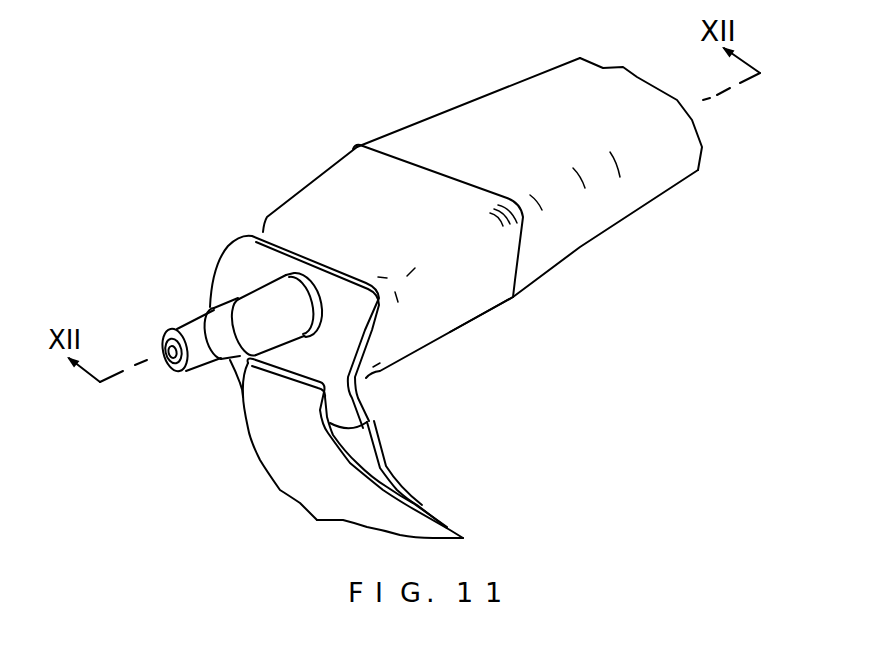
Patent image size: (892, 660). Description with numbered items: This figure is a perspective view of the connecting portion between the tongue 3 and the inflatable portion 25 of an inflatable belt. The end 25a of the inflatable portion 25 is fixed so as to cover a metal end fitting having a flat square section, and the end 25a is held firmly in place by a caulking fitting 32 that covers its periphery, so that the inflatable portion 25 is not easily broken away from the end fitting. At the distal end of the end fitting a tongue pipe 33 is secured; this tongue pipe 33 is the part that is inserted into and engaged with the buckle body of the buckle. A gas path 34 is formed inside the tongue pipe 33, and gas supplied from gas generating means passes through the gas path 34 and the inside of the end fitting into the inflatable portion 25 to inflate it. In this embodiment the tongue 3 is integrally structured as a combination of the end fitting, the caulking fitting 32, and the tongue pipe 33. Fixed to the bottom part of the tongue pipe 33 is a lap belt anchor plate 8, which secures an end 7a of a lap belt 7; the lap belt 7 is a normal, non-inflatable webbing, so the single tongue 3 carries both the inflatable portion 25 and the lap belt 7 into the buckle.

The tongue 3 is at (452, 351).
The inflatable portion 25 is at (632, 213).
The end of the inflatable portion 25a is at (500, 308).
The caulking fitting 32 is at (320, 182).
The lap belt anchor plate 8 is at (360, 388).
The lap belt 7 is at (424, 522).
The end of the lap belt 7a is at (248, 428).
The tongue pipe 33 is at (199, 364).
The gas path 34 is at (166, 355).